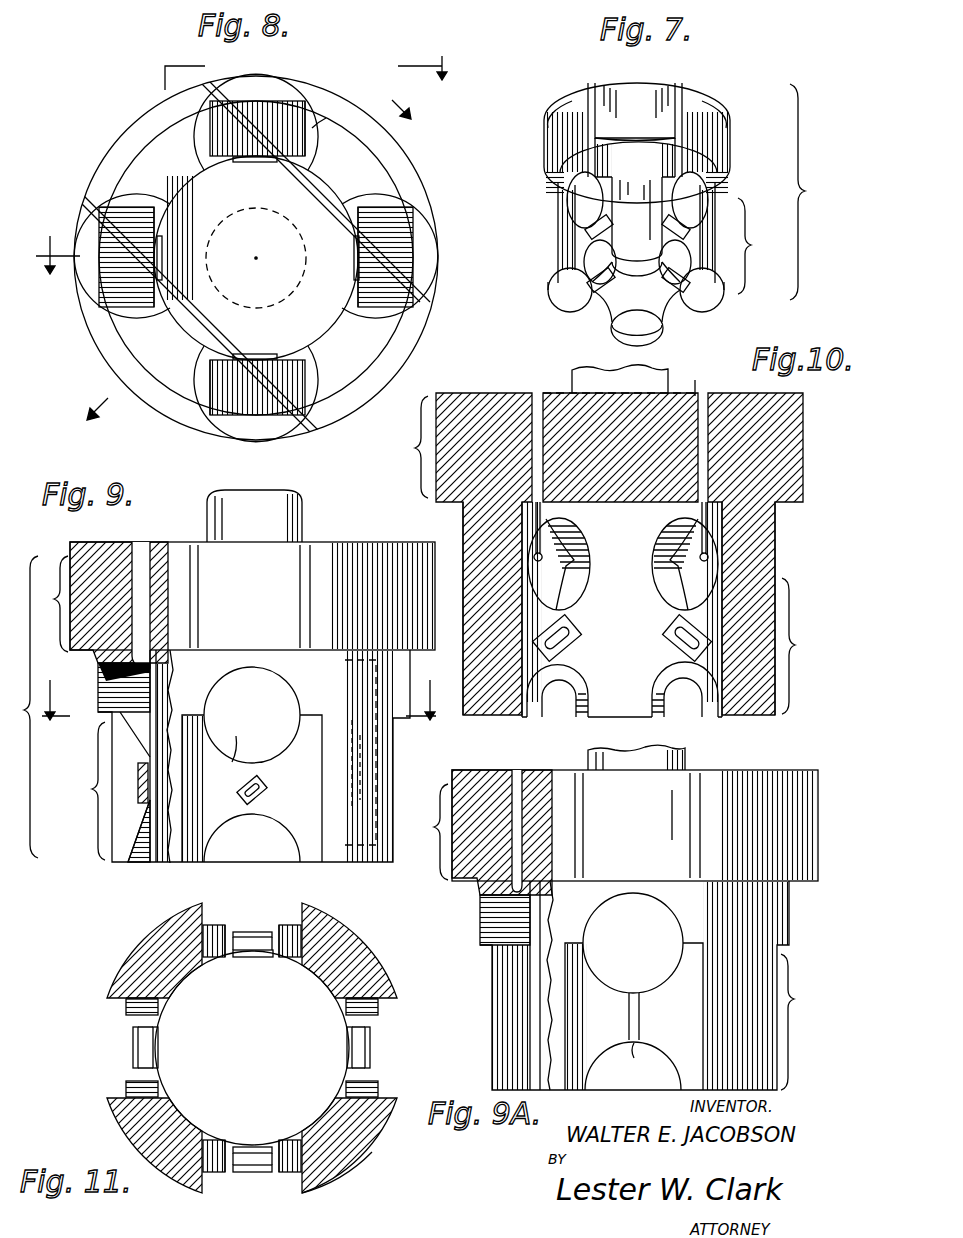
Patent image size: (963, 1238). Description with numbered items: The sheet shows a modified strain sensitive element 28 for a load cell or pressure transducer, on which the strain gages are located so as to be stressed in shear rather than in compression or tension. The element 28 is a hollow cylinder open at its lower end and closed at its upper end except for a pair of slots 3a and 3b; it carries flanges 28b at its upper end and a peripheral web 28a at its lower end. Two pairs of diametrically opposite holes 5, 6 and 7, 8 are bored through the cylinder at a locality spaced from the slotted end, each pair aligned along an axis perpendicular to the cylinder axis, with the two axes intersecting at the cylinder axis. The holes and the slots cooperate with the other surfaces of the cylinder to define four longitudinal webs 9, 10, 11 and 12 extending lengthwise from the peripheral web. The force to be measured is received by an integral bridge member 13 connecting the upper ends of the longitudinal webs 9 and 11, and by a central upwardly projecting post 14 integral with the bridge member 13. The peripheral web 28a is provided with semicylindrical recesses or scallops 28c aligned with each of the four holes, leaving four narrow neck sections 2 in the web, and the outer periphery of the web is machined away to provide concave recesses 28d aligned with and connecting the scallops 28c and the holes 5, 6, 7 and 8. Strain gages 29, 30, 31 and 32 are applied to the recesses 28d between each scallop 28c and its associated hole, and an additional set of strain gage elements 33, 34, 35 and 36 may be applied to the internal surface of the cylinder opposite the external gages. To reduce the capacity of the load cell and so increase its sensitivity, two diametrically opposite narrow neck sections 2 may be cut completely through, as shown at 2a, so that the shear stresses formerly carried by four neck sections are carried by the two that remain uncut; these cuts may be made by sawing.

In FIG. 9, the narrow neck section 2 is at (231, 749).
In FIG. 11, the narrow neck section 2 is at (272, 957).
In FIG. 9A, the cut 2a is at (632, 1034).
In FIG. 8, the slot 3a is at (80, 205).
In FIG. 7, the slot 3a is at (588, 83).
In FIG. 10, the slot 3a is at (712, 392).
In FIG. 9, the slot 3a is at (135, 560).
In FIG. 9A, the slot 3a is at (518, 785).
In FIG. 8, the slot 3b is at (205, 66).
In FIG. 7, the slot 3b is at (682, 83).
In FIG. 10, the slot 3b is at (538, 392).
In FIG. 8, the hole 5 is at (425, 212).
In FIG. 10, the hole 5 is at (718, 566).
In FIG. 9, the hole 5 is at (402, 672).
In FIG. 11, the hole 5 is at (364, 1012).
In FIG. 8, the hole 6 is at (112, 292).
In FIG. 9, the hole 6 is at (100, 678).
In FIG. 9A, the hole 6 is at (490, 900).
In FIG. 11, the hole 6 is at (130, 1008).
In FIG. 8, the hole 7 is at (315, 408).
In FIG. 10, the hole 7 is at (532, 555).
In FIG. 11, the hole 7 is at (290, 934).
In FIG. 8, the hole 8 is at (292, 90).
In FIG. 9, the hole 8 is at (278, 672).
In FIG. 9A, the hole 8 is at (658, 900).
In FIG. 11, the hole 8 is at (296, 1178).
In FIG. 8, the longitudinal web 9 is at (241, 154).
In FIG. 10, the longitudinal web 9 is at (624, 570).
In FIG. 11, the longitudinal web 9 is at (360, 955).
In FIG. 8, the longitudinal web 10 is at (230, 250).
In FIG. 7, the longitudinal web 10 is at (560, 205).
In FIG. 10, the longitudinal web 10 is at (468, 584).
In FIG. 7, the longitudinal web 11 is at (648, 210).
In FIG. 9, the longitudinal web 11 is at (242, 692).
In FIG. 7, the longitudinal web 12 is at (726, 200).
In FIG. 10, the longitudinal web 12 is at (766, 530).
In FIG. 11, the longitudinal web 12 is at (354, 1154).
In FIG. 8, the bridge member 13 is at (404, 330).
In FIG. 7, the bridge member 13 is at (648, 122).
In FIG. 10, the bridge member 13 is at (701, 375).
In FIG. 8, the post 14 is at (182, 176).
In FIG. 10, the post 14 is at (590, 370).
In FIG. 9, the post 14 is at (298, 516).
In FIG. 9A, the post 14 is at (684, 758).
In FIG. 7, the strain sensitive element 28 is at (811, 192).
In FIG. 9, the strain sensitive element 28 is at (22, 707).
In FIG. 11, the strain sensitive element 28 is at (112, 928).
In FIG. 7, the peripheral web 28a is at (672, 233).
In FIG. 10, the peripheral web 28a is at (683, 646).
In FIG. 9, the peripheral web 28a is at (231, 756).
In FIG. 9A, the peripheral web 28a is at (653, 985).
In FIG. 8, the flange 28b is at (392, 150).
In FIG. 7, the flange 28b is at (712, 120).
In FIG. 10, the flange 28b is at (594, 554).
In FIG. 9, the flange 28b is at (216, 840).
In FIG. 9A, the flange 28b is at (612, 832).
In FIG. 8, the semicylindrical recess 28c is at (318, 130).
In FIG. 7, the semicylindrical recess 28c is at (672, 318).
In FIG. 10, the semicylindrical recess 28c is at (540, 717).
In FIG. 9, the semicylindrical recess 28c is at (296, 840).
In FIG. 9A, the semicylindrical recess 28c is at (678, 1066).
In FIG. 8, the concave recess 28d is at (190, 104).
In FIG. 11, the concave recess 28d is at (300, 916).
In FIG. 9, the strain gage 29 is at (264, 788).
In FIG. 11, the strain gage 29 is at (242, 1172).
In FIG. 11, the strain gage 30 is at (130, 1045).
In FIG. 11, the strain gage 31 is at (250, 931).
In FIG. 11, the strain gage 32 is at (371, 1054).
In FIG. 11, the strain gage element 33 is at (252, 1146).
In FIG. 11, the strain gage element 34 is at (148, 1052).
In FIG. 11, the strain gage element 35 is at (246, 957).
In FIG. 11, the strain gage element 36 is at (348, 1055).